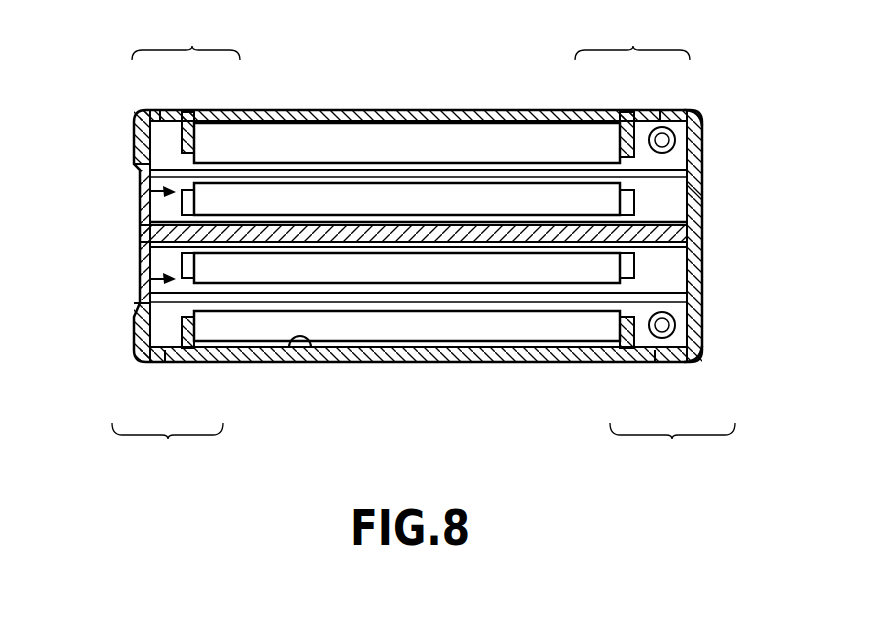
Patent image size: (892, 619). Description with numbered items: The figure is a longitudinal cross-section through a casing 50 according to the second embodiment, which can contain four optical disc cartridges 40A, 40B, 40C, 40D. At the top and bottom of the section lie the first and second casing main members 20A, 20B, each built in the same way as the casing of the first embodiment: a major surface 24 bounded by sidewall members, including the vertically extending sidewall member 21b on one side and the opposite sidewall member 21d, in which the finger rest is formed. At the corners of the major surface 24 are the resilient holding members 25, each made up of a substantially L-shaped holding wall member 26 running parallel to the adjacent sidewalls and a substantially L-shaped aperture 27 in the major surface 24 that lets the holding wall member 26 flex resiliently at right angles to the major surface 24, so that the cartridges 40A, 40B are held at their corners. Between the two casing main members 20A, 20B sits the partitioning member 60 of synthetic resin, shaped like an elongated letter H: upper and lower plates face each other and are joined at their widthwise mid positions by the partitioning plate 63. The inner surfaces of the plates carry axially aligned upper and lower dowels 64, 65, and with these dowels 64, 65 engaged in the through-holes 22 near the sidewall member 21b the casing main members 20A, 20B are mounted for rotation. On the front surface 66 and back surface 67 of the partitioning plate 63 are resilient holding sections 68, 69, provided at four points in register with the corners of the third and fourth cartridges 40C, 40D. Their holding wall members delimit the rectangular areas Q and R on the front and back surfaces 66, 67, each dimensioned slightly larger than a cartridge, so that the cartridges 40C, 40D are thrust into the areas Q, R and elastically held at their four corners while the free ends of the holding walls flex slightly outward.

The casing 50 is at (307, 100).
The first casing main member 20A is at (375, 112).
The second casing main member 20B is at (540, 357).
The vertically extending sidewall member 21d is at (137, 125).
The vertically extending sidewall member 21b is at (701, 170).
The through-hole 22 is at (676, 141).
The major surface 24 is at (310, 363).
The resilient holding member 25 is at (423, 242).
The holding wall member 26 is at (203, 110).
The aperture 27 is at (167, 110).
The optical disc cartridge 40A is at (448, 146).
The optical disc cartridge 40B is at (460, 336).
The third optical disc cartridge 40C is at (520, 203).
The fourth optical disc cartridge 40D is at (385, 282).
The partitioning member 60 is at (143, 236).
The partitioning plate 63 is at (673, 232).
The upper dowel 64 is at (690, 114).
The lower dowel 65 is at (688, 352).
The front surface 66 is at (688, 198).
The back surface 67 is at (655, 244).
The resilient holding section 68 is at (152, 204).
The resilient holding section 69 is at (182, 256).
The rectangular area Q is at (150, 190).
The rectangular area R is at (148, 282).